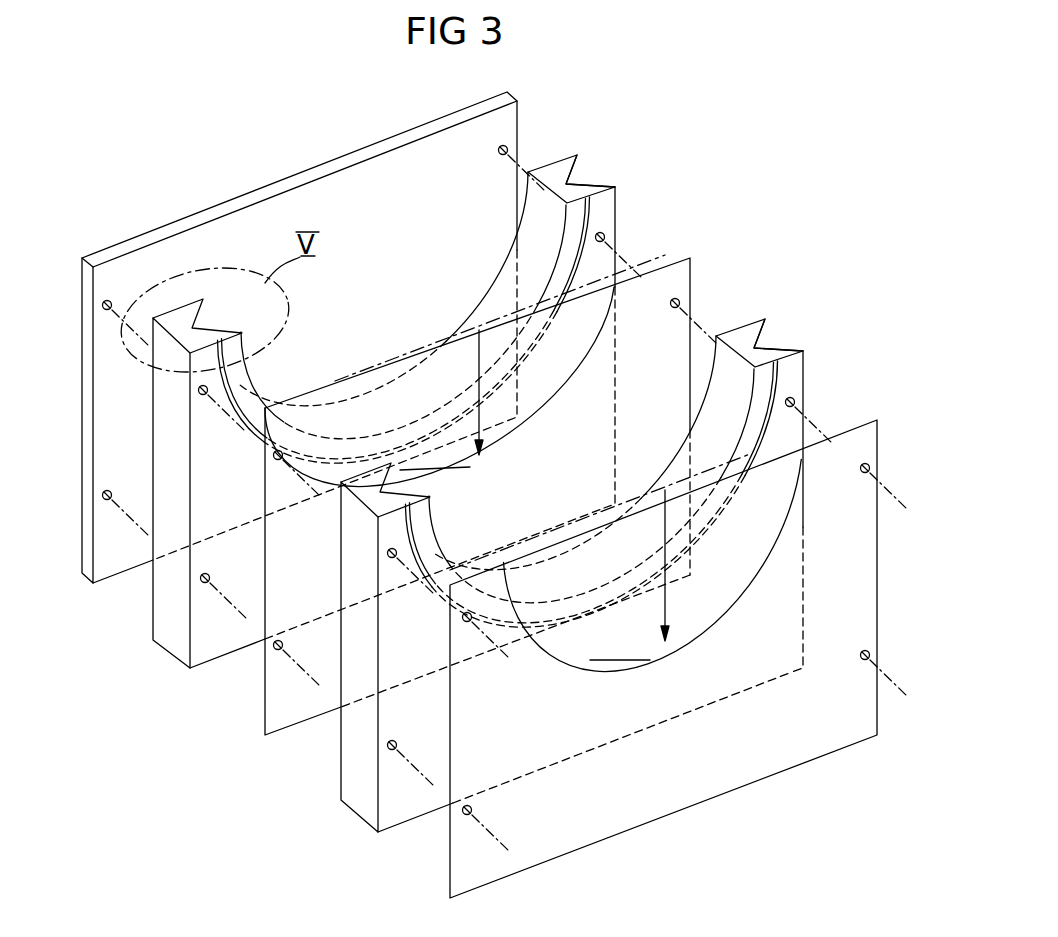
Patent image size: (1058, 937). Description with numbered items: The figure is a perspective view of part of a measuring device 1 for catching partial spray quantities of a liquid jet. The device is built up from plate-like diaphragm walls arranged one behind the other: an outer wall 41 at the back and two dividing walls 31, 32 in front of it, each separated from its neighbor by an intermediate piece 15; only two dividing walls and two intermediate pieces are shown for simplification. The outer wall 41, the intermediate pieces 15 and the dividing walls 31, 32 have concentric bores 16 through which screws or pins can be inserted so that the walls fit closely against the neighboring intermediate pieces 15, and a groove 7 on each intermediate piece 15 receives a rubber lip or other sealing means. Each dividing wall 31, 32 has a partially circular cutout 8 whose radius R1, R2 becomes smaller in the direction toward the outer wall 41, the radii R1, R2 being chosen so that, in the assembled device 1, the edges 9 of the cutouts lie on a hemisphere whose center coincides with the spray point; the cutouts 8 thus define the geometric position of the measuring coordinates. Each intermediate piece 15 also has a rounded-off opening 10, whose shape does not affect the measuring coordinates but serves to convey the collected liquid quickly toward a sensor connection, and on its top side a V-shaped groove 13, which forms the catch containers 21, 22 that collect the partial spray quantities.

The measuring device 1 is at (758, 178).
The groove 7 is at (593, 206).
The partially circular cutout 8 is at (553, 395).
The edges 9 is at (462, 466).
The opening 10 is at (413, 393).
The V-shaped groove 13 is at (207, 320).
The intermediate piece 15 is at (593, 175).
The bores 16 is at (509, 149).
The catch container 21 is at (568, 180).
The catch container 22 is at (744, 330).
The dividing wall 31 is at (692, 268).
The dividing wall 32 is at (878, 430).
The outer wall 41 is at (326, 195).
The radius of cutout R1 is at (478, 355).
The radius of cutout R2 is at (668, 612).